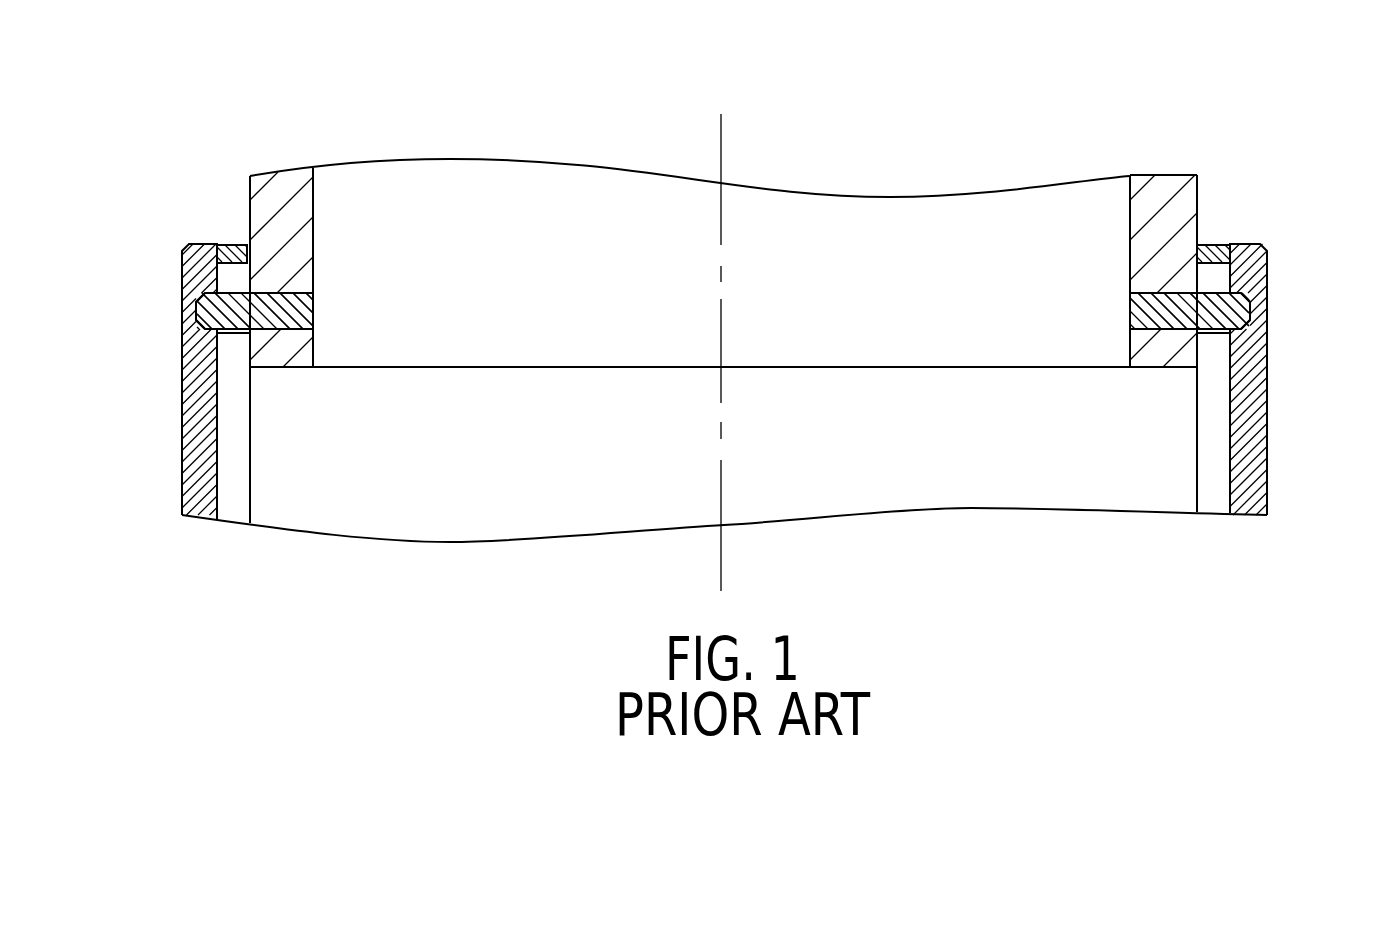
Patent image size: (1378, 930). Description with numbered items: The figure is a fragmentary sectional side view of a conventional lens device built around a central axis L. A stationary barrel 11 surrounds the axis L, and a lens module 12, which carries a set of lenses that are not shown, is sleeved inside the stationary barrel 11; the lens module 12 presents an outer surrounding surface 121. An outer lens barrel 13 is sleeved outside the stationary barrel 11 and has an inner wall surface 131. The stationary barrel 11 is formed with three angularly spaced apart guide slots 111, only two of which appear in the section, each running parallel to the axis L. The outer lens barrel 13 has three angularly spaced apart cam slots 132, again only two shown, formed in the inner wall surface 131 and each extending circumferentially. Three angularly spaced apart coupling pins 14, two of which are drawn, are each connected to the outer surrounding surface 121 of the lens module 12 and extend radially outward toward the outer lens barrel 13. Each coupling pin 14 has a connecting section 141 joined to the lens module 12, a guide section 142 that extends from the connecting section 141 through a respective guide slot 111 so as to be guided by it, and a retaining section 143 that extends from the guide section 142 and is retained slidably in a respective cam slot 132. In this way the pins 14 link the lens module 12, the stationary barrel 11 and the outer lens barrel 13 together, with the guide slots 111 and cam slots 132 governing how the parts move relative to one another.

The stationary barrel 11 is at (236, 244).
The guide slot 111 is at (237, 507).
The lens module 12 is at (263, 172).
The outer surrounding surface 121 is at (250, 203).
The outer lens barrel 13 is at (183, 370).
The inner wall surface 131 is at (197, 420).
The cam slot 132 is at (197, 307).
The coupling pin 14 is at (316, 308).
The connecting section 141 is at (288, 298).
The guide section 142 is at (218, 268).
The retaining section 143 is at (200, 289).
The axis L is at (721, 331).